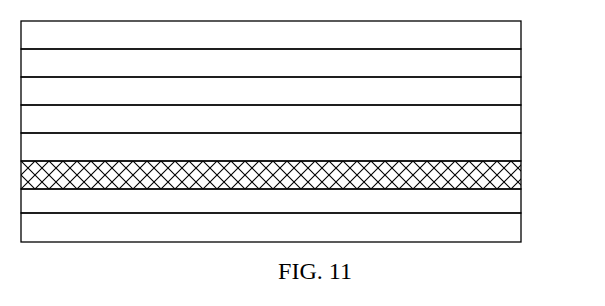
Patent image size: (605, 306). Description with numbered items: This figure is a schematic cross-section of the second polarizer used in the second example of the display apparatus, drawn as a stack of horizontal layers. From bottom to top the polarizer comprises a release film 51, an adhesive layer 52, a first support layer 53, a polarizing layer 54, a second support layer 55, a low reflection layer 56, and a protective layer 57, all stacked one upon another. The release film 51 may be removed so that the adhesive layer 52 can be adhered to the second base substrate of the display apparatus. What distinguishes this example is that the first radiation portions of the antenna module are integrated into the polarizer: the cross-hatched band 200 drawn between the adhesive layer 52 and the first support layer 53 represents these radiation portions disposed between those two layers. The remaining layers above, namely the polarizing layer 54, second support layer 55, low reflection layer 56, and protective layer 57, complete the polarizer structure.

The release film 51 is at (492, 228).
The adhesive layer 52 is at (492, 200).
The first support layer 53 is at (492, 145).
The polarizing layer 54 is at (492, 115).
The second support layer 55 is at (492, 87).
The low reflection layer 56 is at (492, 59).
The protective layer 57 is at (492, 29).
The hatched intermediate layer 200 is at (492, 175).